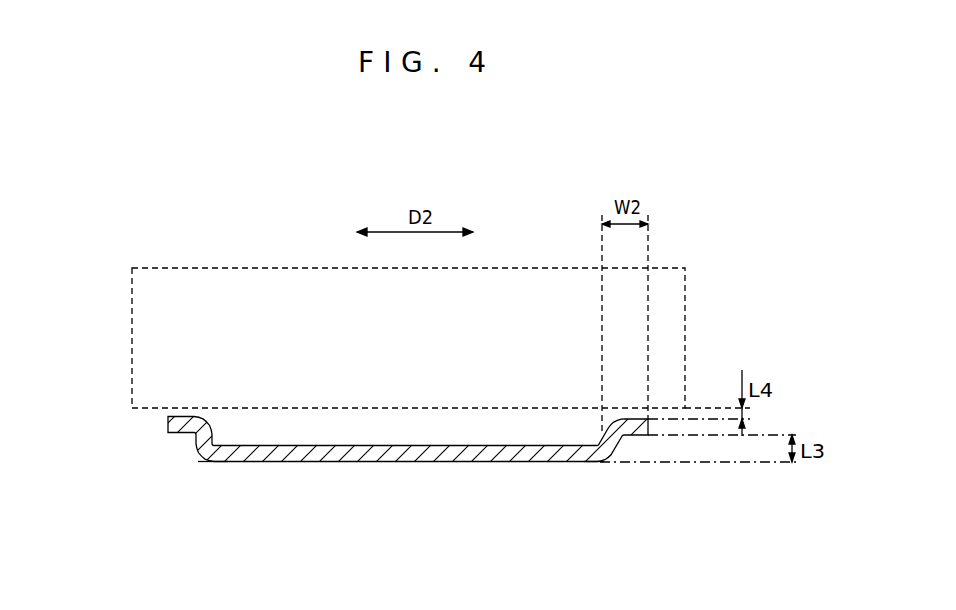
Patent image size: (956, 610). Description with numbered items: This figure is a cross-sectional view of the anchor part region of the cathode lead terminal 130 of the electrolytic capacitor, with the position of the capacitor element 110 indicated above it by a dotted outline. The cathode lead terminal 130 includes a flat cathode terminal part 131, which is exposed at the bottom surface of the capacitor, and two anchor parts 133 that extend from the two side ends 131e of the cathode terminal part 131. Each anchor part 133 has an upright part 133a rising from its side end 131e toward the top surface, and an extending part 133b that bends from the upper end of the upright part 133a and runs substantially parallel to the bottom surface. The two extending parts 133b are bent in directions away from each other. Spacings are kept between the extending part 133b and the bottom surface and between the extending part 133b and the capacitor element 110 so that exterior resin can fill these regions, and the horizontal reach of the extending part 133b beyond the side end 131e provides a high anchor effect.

The capacitor element 110 is at (272, 266).
The cathode lead terminal 130 is at (373, 483).
The cathode terminal part 131 is at (405, 463).
The side end 131e is at (213, 470).
The anchor part 133 is at (373, 479).
The upright part 133a is at (199, 441).
The extending part 133b is at (170, 425).